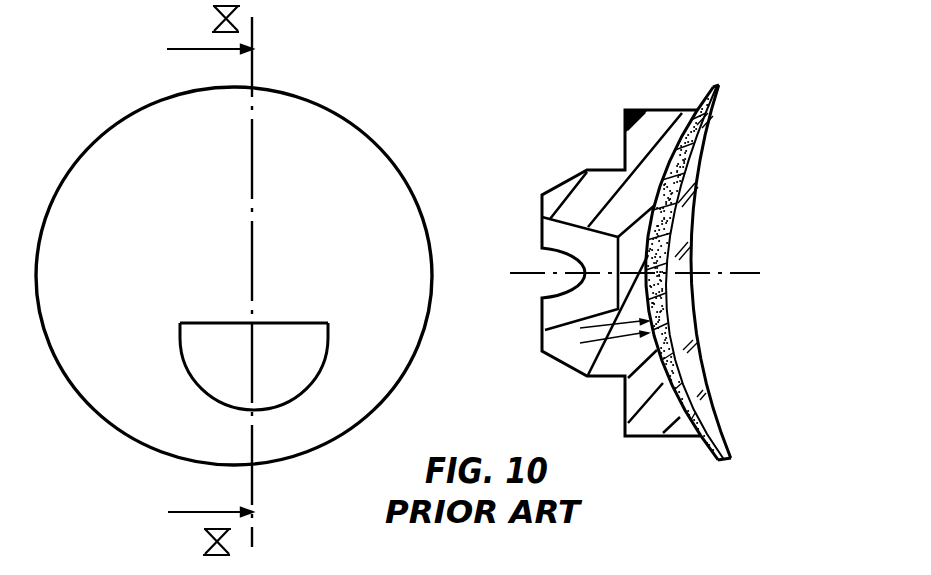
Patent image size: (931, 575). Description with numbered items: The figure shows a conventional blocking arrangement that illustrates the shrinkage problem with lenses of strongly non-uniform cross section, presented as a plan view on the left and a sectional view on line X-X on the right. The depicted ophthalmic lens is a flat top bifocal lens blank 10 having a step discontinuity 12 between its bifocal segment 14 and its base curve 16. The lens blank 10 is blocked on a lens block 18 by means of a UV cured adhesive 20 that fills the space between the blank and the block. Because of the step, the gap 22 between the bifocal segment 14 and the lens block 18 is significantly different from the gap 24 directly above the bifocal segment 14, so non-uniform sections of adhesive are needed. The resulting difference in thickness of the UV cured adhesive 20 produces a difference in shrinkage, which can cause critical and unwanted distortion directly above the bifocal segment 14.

The flat top bifocal lens blank 10 is at (388, 149).
The step discontinuity 12 is at (217, 318).
The bifocal segment 14 is at (302, 368).
The base curve 16 is at (193, 187).
The lens block 18 is at (602, 165).
The UV cured adhesive 20 is at (690, 188).
The gap 22 is at (676, 332).
The gap 24 is at (646, 303).